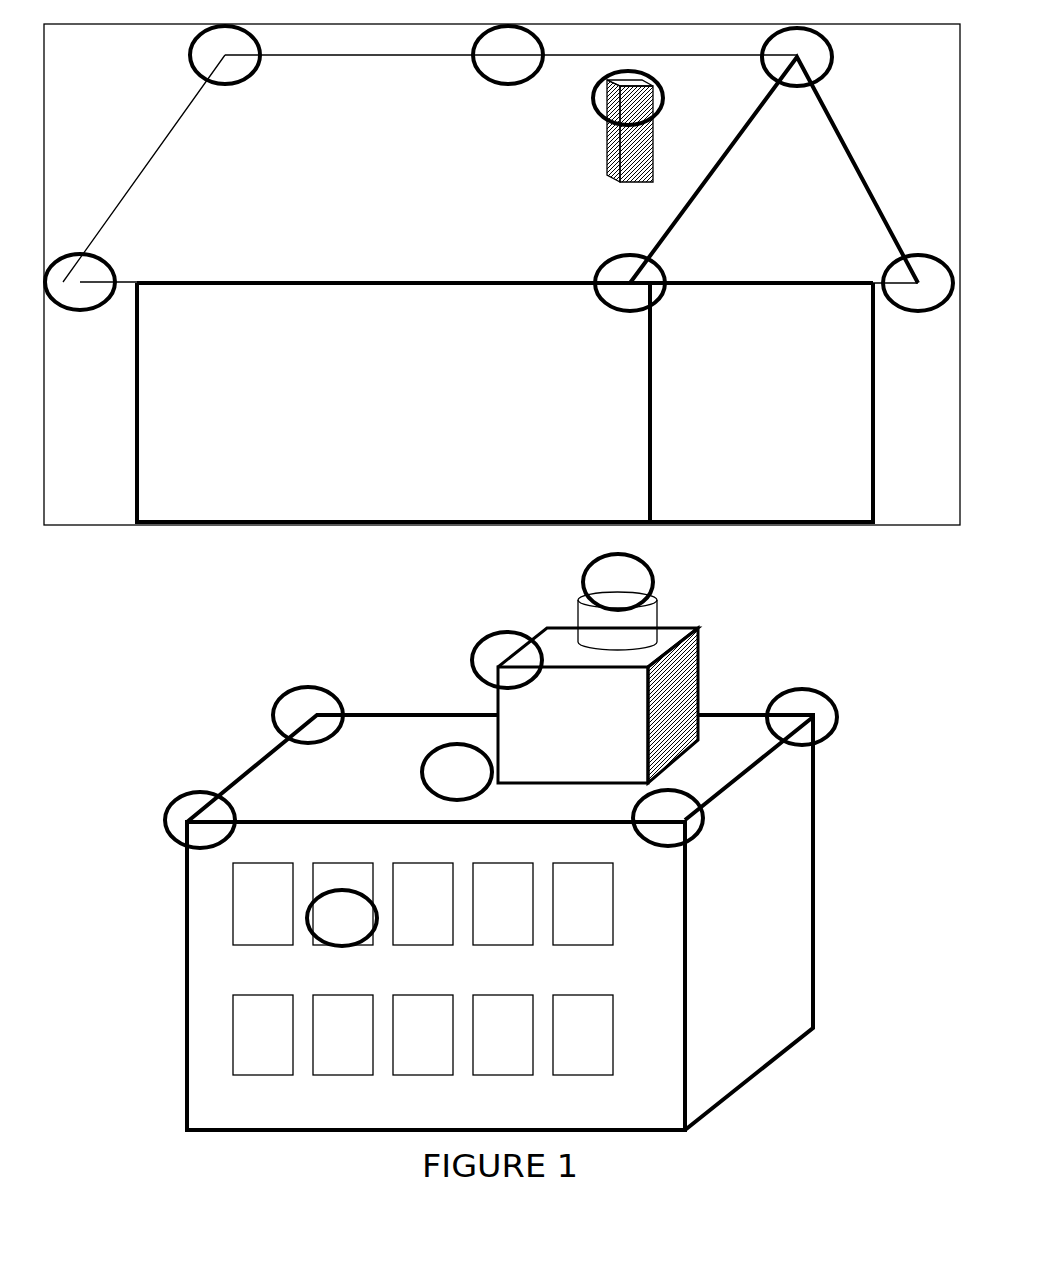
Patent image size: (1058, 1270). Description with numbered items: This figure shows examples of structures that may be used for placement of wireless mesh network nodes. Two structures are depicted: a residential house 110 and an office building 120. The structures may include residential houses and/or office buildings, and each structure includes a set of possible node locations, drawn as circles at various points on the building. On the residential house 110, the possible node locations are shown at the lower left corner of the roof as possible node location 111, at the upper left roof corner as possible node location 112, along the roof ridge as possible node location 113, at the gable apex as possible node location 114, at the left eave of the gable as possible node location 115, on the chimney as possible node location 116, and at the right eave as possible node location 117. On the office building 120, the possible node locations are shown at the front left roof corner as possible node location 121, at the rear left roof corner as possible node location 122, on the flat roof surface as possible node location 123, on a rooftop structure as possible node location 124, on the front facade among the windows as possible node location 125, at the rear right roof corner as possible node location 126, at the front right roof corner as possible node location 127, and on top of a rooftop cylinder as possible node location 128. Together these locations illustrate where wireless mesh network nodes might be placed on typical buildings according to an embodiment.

The structure 110 is at (409, 431).
The possible node location 111 is at (85, 313).
The possible node location 112 is at (189, 57).
The possible node location 113 is at (470, 35).
The possible node location 114 is at (836, 58).
The possible node location 115 is at (622, 313).
The possible node location 116 is at (668, 113).
The possible node location 117 is at (930, 313).
The structure 120 is at (545, 983).
The possible node location 121 is at (169, 830).
The possible node location 122 is at (272, 710).
The possible node location 123 is at (422, 762).
The possible node location 124 is at (475, 643).
The possible node location 125 is at (318, 943).
The possible node location 126 is at (841, 727).
The possible node location 127 is at (709, 809).
The possible node location 128 is at (651, 572).